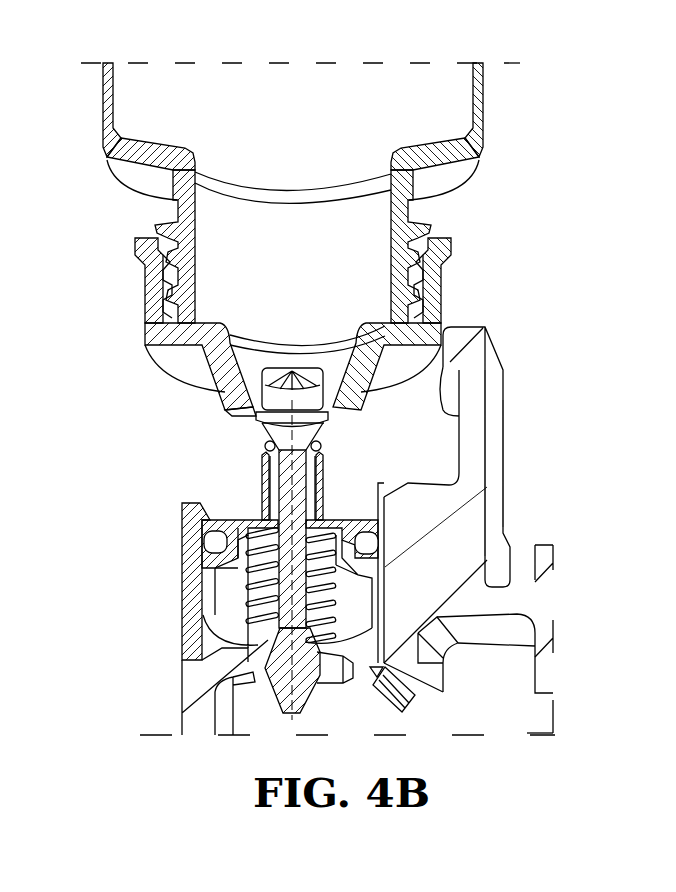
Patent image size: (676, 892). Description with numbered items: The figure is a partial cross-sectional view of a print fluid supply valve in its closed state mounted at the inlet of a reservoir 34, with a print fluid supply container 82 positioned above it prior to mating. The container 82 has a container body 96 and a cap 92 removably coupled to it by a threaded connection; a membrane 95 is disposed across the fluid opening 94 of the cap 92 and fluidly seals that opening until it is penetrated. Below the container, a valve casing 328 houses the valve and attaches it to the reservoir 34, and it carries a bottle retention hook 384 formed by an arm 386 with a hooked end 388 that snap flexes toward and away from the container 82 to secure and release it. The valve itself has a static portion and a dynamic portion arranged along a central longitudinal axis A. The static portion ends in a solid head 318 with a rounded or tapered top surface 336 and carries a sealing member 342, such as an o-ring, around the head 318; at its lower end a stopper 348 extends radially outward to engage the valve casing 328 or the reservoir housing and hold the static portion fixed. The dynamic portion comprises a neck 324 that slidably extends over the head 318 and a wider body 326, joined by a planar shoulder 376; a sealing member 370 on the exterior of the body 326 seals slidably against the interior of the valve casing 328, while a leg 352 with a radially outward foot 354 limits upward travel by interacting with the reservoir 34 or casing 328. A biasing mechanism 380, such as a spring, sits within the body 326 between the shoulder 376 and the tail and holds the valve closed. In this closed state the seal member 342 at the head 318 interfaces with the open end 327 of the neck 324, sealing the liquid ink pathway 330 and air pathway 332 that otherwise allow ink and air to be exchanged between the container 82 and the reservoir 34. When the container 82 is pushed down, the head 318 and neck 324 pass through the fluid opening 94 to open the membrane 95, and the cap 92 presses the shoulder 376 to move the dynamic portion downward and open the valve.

The container body 96 is at (477, 113).
The print fluid supply container 82 is at (468, 165).
The cap 92 is at (447, 257).
The fluid opening 94 is at (253, 413).
The membrane 95 is at (303, 403).
The hooked end 388 is at (462, 343).
The bottle retention hook 384 is at (515, 352).
The arm 386 is at (462, 432).
The valve casing 328 is at (458, 527).
The body 326 is at (384, 567).
The reservoir 34 is at (550, 670).
The foot 354 is at (446, 684).
The leg 352 is at (416, 706).
The top surface 336 is at (323, 430).
The central longitudinal axis A is at (287, 420).
The head 318 is at (262, 440).
The sealing member 342 is at (321, 446).
The open end 327 is at (265, 452).
The neck 324 is at (322, 480).
The liquid ink pathway 330 is at (312, 498).
The air pathway 332 is at (277, 493).
The shoulder 376 is at (205, 505).
The sealing member 370 is at (208, 540).
The biasing mechanism 380 is at (247, 577).
The stopper 348 is at (247, 660).